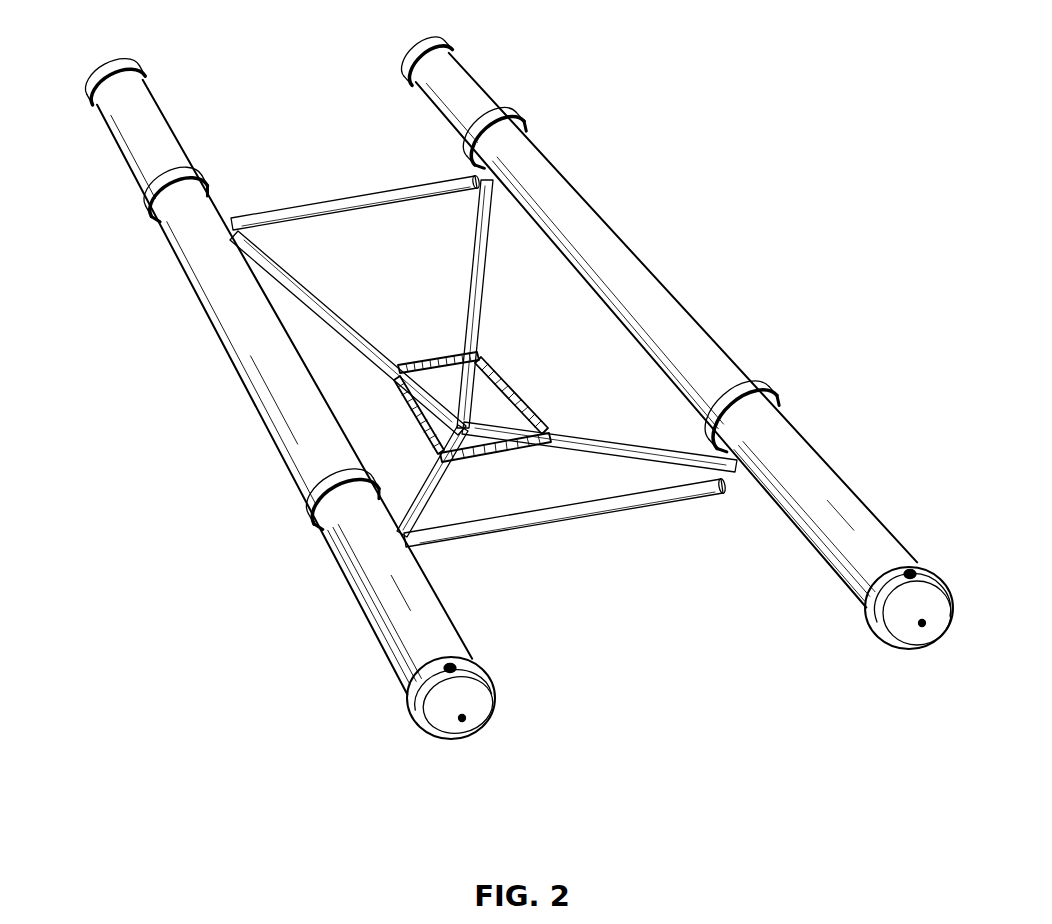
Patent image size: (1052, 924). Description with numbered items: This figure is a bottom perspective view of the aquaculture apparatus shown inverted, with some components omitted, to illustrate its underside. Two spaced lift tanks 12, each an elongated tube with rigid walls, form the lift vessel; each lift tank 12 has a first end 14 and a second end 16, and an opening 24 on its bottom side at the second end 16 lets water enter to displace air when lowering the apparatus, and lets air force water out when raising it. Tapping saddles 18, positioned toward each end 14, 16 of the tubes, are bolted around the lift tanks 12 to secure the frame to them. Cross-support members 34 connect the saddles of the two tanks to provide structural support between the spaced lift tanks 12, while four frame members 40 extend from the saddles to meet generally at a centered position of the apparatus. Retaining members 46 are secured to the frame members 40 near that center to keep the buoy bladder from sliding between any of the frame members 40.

The lift tank 12 is at (243, 318).
The first end 14 is at (104, 58).
The second end 16 is at (461, 746).
The tapping saddle 18 is at (157, 200).
The opening 24 is at (452, 665).
The cross-support member 34 is at (322, 207).
The frame member 40 is at (285, 268).
The retaining member 46 is at (425, 360).